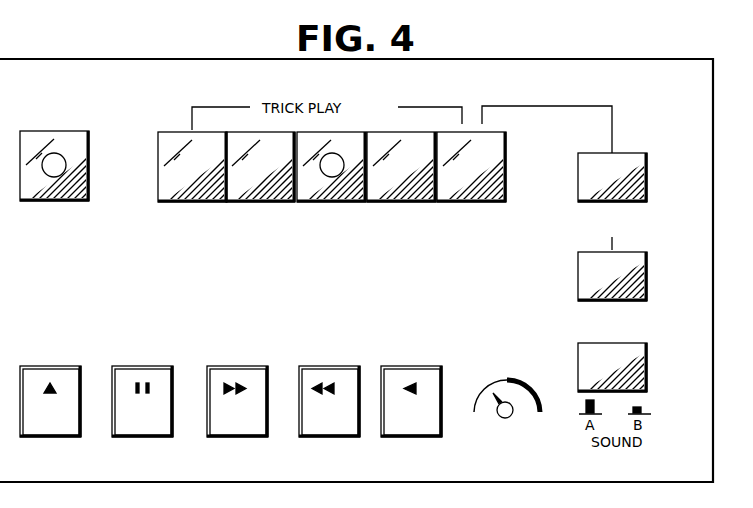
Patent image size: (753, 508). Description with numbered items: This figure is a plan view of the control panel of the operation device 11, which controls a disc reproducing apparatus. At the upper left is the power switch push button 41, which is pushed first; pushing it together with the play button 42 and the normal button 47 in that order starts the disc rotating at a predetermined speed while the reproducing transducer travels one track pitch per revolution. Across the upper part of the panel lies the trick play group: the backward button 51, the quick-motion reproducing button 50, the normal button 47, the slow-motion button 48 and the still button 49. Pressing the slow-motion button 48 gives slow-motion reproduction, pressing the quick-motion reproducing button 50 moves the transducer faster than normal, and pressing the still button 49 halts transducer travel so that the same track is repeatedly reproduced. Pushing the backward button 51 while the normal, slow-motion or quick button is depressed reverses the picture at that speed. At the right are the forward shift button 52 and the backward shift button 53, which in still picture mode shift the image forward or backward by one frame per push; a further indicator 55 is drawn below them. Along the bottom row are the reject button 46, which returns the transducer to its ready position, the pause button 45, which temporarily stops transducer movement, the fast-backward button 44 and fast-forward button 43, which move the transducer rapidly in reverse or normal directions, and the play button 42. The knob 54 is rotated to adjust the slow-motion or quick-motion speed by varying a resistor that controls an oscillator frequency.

The operation device 11 is at (40, 57).
The power switch push button 41 is at (90, 172).
The play button 42 is at (400, 438).
The fast-forward button 43 is at (316, 438).
The fast-backward button 44 is at (228, 438).
The pause button 45 is at (137, 438).
The reject button 46 is at (47, 438).
The normal button 47 is at (304, 196).
The slow-motion button 48 is at (376, 196).
The still button 49 is at (497, 196).
The quick-motion reproducing button 50 is at (234, 200).
The backward button 51 is at (158, 138).
The forward shift button 52 is at (647, 165).
The backward shift button 53 is at (647, 264).
The knob 54 is at (509, 418).
The indicator 55 is at (647, 362).